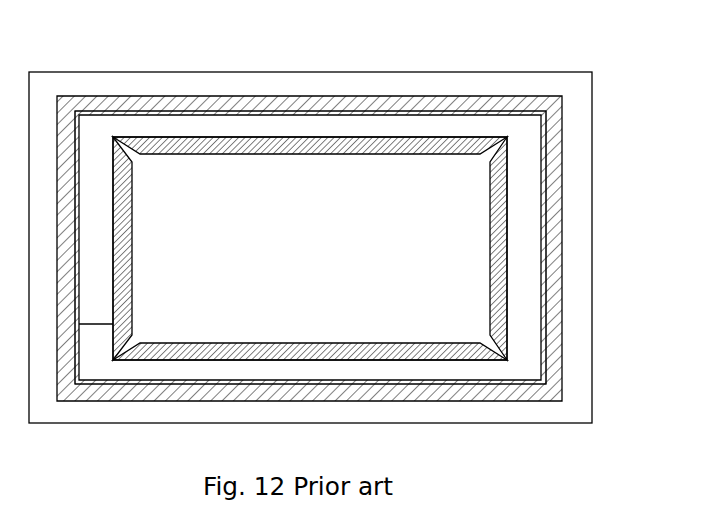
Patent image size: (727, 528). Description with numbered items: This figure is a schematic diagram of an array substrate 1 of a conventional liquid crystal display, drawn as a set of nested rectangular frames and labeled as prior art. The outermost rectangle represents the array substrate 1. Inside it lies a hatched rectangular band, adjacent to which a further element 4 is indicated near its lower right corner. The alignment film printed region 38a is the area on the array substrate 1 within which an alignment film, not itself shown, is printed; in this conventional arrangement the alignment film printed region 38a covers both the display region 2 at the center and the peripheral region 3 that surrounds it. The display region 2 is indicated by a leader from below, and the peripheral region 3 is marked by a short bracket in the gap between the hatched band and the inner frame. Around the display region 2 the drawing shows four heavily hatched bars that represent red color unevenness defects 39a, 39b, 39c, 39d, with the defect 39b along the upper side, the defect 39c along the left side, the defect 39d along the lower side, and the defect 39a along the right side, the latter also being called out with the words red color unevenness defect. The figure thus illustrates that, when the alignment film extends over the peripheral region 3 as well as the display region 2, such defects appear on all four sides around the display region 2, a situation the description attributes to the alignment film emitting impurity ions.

The array substrate 1 is at (554, 71).
The display region 2 is at (277, 357).
The peripheral region 3 is at (94, 325).
The sealing member 4 is at (530, 390).
The alignment film printed region 38a is at (545, 282).
The red color unevenness defect 39a is at (493, 247).
The red color unevenness defect 39b is at (306, 145).
The red color unevenness defect 39c is at (125, 252).
The red color unevenness defect 39d is at (300, 342).